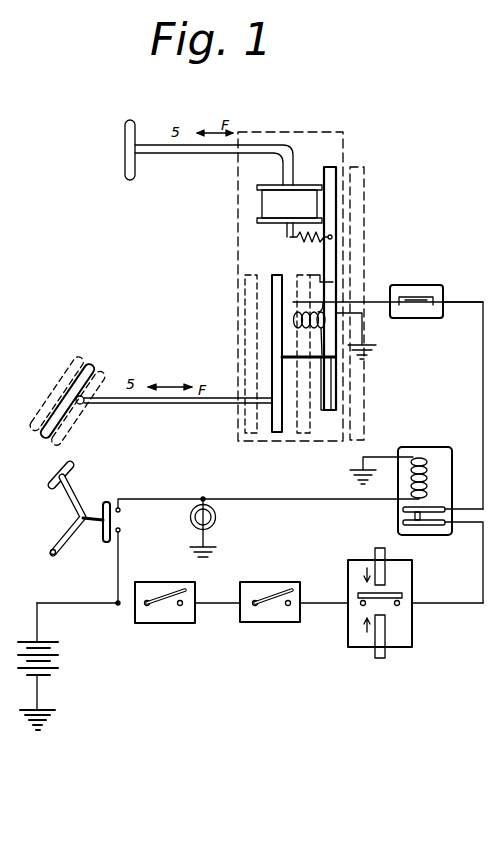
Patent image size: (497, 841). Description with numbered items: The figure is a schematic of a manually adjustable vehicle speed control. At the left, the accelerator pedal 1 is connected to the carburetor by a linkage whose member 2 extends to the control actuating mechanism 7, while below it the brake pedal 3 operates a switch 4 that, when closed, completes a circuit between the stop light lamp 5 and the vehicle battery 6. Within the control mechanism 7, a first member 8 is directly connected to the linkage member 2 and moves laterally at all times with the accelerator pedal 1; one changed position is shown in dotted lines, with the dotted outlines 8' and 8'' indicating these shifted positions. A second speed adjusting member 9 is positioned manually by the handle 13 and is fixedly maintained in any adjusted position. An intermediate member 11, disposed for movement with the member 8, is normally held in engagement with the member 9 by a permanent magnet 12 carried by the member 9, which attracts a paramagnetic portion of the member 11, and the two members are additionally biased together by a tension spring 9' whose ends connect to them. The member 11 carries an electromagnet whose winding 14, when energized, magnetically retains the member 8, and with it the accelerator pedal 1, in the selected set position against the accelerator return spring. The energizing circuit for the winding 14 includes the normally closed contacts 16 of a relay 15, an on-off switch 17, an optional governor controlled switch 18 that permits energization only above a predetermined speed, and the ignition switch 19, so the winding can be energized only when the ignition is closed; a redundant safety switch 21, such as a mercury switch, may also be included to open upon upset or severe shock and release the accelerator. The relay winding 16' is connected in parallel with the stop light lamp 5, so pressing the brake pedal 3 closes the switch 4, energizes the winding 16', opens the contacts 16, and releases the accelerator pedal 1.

The accelerator pedal 1 is at (93, 366).
The linkage member 2 is at (130, 404).
The brake pedal 3 is at (62, 482).
The switch 4 is at (116, 497).
The stop light lamp 5 is at (216, 517).
The vehicle battery 6 is at (48, 642).
The control actuating mechanism 7 is at (347, 154).
The first member 8 is at (242, 353).
The guide 8' is at (233, 373).
The guide 8'' is at (295, 374).
The speed adjusting member 9 is at (290, 272).
The tension spring 9' is at (295, 243).
The intermediate member 11 is at (337, 258).
The permanent magnet 12 is at (300, 213).
The handle 13 is at (136, 121).
The electromagnet winding 14 is at (388, 328).
The relay 15 is at (416, 510).
The normally closed contacts 16 is at (443, 555).
The relay winding 16' is at (400, 458).
The on-off switch 17 is at (413, 641).
The governor controlled switch 18 is at (280, 623).
The ignition switch 19 is at (166, 623).
The redundant switch 21 is at (425, 285).